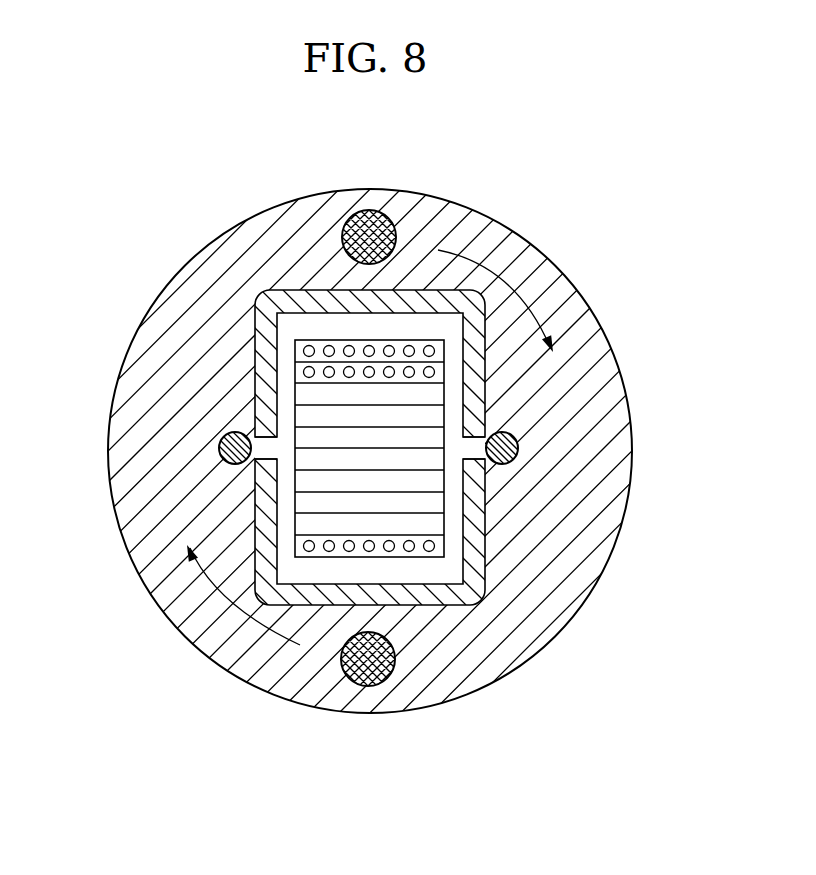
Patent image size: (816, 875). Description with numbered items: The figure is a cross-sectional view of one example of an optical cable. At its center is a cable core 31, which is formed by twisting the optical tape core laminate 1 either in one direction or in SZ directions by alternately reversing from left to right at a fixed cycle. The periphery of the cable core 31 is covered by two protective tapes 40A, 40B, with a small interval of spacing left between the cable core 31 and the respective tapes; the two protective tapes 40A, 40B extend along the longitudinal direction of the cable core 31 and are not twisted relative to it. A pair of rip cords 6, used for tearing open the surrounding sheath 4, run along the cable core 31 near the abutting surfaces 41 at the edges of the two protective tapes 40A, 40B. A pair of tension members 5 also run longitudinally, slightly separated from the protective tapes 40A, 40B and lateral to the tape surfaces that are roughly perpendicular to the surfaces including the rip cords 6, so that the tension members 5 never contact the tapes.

The optical tape core laminate 1 is at (408, 448).
The sheath 4 is at (593, 553).
The tension members 5 is at (369, 212).
The rip cords 6 is at (220, 448).
The cable core 31 is at (400, 325).
The protective tape 40A is at (302, 290).
The protective tape 40B is at (453, 602).
The abutting surfaces 41 is at (255, 395).